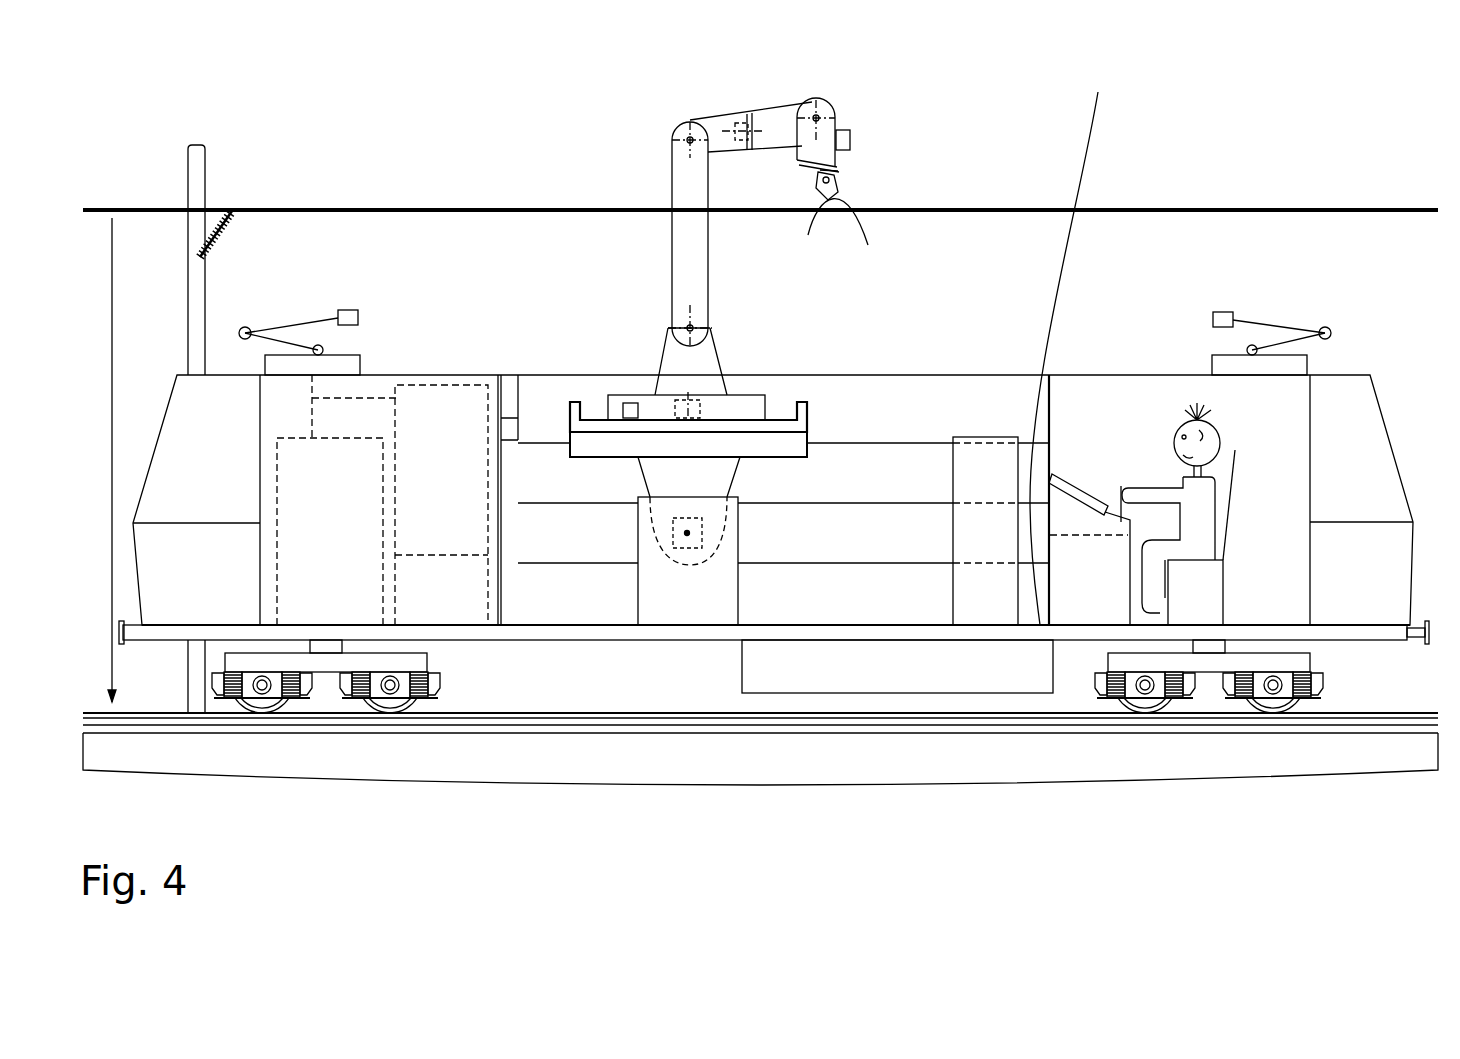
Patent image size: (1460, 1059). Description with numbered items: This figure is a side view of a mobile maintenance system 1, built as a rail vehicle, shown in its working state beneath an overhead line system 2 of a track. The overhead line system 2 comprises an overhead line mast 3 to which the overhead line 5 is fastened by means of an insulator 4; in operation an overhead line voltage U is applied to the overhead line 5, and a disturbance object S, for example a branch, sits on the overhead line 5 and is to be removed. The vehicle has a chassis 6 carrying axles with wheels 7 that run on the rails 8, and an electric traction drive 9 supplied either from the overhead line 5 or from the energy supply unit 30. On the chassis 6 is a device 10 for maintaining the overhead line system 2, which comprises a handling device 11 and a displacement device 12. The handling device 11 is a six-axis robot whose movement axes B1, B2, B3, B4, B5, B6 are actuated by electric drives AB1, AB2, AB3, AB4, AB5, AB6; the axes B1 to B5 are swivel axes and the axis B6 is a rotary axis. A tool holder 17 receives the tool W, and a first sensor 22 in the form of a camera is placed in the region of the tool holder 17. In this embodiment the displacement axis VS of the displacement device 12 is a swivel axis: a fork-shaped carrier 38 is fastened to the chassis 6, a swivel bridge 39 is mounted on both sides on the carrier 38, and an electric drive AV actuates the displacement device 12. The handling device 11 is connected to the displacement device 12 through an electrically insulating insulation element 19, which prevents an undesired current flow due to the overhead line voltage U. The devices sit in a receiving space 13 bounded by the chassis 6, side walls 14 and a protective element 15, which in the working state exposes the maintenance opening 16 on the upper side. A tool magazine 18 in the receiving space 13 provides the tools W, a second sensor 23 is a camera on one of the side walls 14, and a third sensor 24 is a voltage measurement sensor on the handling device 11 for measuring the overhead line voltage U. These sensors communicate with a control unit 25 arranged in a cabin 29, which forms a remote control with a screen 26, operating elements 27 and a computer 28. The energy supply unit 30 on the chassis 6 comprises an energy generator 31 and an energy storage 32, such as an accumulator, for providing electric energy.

The mobile maintenance system 1 is at (1418, 420).
The overhead line system 2 is at (230, 188).
The overhead line mast 3 is at (190, 168).
The insulator 4 is at (222, 237).
The overhead line 5 is at (142, 208).
The chassis 6 is at (1345, 635).
The wheel 7 is at (1273, 705).
The rail 8 is at (1413, 722).
The electric traction drive 9 is at (322, 592).
The device for the maintenance of the overhead line system 10 is at (572, 267).
The handling device 11 is at (689, 118).
The displacement device 12 is at (680, 598).
The receiving space 13 is at (560, 428).
The side wall 14 is at (1045, 395).
The protective element 15 is at (922, 425).
The maintenance opening 16 is at (1000, 372).
The tool holder 17 is at (848, 140).
The tool magazine 18 is at (985, 608).
The insulation element 19 is at (813, 430).
The first sensor 22 is at (840, 115).
The second sensor 23 is at (505, 397).
The third sensor 24 is at (630, 412).
The control unit 25 is at (1089, 612).
The screen 26 is at (1098, 513).
The operating elements 27 is at (1122, 483).
The computer 28 is at (1063, 603).
The cabin 29 is at (1257, 547).
The energy supply unit 30 is at (457, 617).
The energy generator 31 is at (432, 590).
The energy storage 32 is at (415, 530).
The carrier 38 is at (660, 608).
The swivel bridge 39 is at (723, 448).
The first movement axis B1 is at (668, 395).
The second movement axis B2 is at (686, 330).
The third movement axis B3 is at (674, 147).
The fourth movement axis B4 is at (737, 130).
The fifth movement axis B5 is at (812, 117).
The sixth movement axis B6 is at (802, 133).
The electric drive AB1 is at (684, 400).
The electric drive AB2 is at (688, 318).
The electric drive AB3 is at (683, 138).
The electric drive AB4 is at (743, 150).
The electric drive AB5 is at (823, 110).
The electric drive AB6 is at (805, 155).
The tool W is at (838, 172).
The disturbance object S is at (862, 190).
The overhead line voltage U is at (104, 460).
The displacement axis VS is at (687, 533).
The drive AV is at (698, 548).